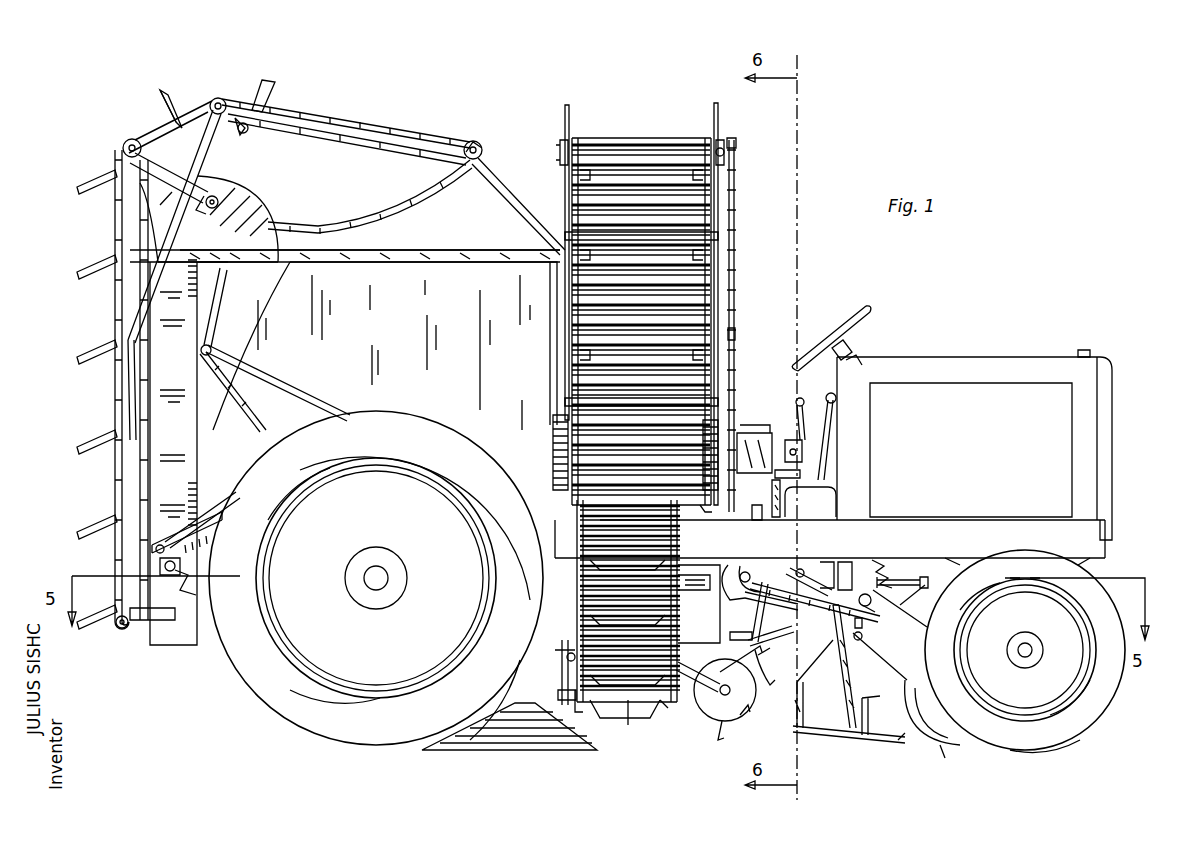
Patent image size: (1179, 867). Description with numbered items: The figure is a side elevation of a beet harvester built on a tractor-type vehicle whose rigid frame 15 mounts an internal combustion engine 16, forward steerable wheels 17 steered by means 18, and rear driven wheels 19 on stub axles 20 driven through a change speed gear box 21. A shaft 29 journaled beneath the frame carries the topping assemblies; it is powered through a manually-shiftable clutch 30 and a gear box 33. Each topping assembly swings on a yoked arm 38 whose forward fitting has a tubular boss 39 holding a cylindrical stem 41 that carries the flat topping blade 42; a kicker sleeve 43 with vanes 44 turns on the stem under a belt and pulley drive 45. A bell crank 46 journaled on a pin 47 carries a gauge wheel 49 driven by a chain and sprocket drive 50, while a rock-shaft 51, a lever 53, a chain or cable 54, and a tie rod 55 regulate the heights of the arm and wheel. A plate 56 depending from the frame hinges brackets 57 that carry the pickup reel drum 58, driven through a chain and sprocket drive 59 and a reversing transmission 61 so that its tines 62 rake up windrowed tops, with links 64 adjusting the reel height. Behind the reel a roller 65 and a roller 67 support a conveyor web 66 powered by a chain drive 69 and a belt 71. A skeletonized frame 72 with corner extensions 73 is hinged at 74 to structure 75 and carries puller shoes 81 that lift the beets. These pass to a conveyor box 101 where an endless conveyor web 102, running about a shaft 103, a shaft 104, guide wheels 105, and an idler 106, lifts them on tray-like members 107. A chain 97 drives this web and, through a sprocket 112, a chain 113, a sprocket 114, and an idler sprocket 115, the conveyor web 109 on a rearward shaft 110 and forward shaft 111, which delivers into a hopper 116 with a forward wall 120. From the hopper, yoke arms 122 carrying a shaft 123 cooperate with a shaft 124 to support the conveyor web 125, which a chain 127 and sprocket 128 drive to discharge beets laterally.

The rigid frame 15 is at (830, 539).
The internal combustion engine 16 is at (974, 445).
The steerable wheels 17 is at (1025, 651).
The steering means 18 is at (848, 340).
The driven wheels 19 is at (376, 578).
The stub axles 20 is at (370, 575).
The change speed gear box 21 is at (804, 498).
The shaft 29 is at (742, 560).
The manually-shiftable clutch 30 is at (805, 450).
The gear box 33 is at (760, 428).
The yoked arm 38 is at (770, 562).
The tubular boss 39 is at (828, 614).
The cylindrical stem 41 is at (892, 546).
The topping blade 42 is at (856, 733).
The tubular sleeve 43 is at (836, 636).
The vanes 44 is at (866, 700).
The belt and pulley drive 45 is at (758, 600).
The bell crank 46 is at (890, 608).
The pin 47 is at (866, 608).
The gauge wheel 49 is at (905, 698).
The chain and sprocket drive 50 is at (756, 636).
The rock-shaft 51 is at (806, 560).
The lever 53 is at (836, 556).
The chain or cable 54 is at (845, 561).
The tie rod 55 is at (848, 560).
The plate 56 is at (566, 690).
The brackets 57 is at (720, 688).
The drum 58 is at (744, 712).
The chain and sprocket drive 59 is at (738, 627).
The reversing and speed-reducing transmission 61 is at (752, 642).
The tines 62 is at (775, 680).
The links 64 is at (771, 639).
The roller 65 is at (580, 694).
The conveyor web 66 is at (630, 712).
The roller 67 is at (714, 512).
The chain drive 69 is at (802, 472).
The belt 71 is at (760, 516).
The skeletonized frame 72 is at (560, 640).
The upper corner extensions 73 is at (198, 580).
The hinged connection 74 is at (170, 572).
The rigidly-associated structure 75 is at (224, 488).
The puller shoes 81 is at (540, 752).
The chain 97 is at (216, 282).
The conveyor box 101 is at (344, 447).
The endless conveyor web 102 is at (114, 394).
The shaft 103 is at (118, 634).
The shaft 104 is at (260, 108).
The guide wheels 105 is at (210, 219).
The direction-changing idler 106 is at (126, 146).
The tray-like members 107 is at (96, 266).
The conveyor web 109 is at (416, 198).
The rearward shaft 110 is at (206, 196).
The forward shaft 111 is at (484, 150).
The sprocket 112 is at (238, 136).
The chain 113 is at (400, 120).
The sprocket 114 is at (480, 143).
The idler sprocket 115 is at (214, 96).
The hopper 116 is at (370, 340).
The hopper forward wall 120 is at (736, 296).
The yoke arms 122 is at (566, 112).
The shaft 123 is at (720, 138).
The shaft 124 is at (716, 600).
The conveyor web 125 is at (636, 146).
The chain 127 is at (736, 332).
The sprocket 128 is at (737, 140).